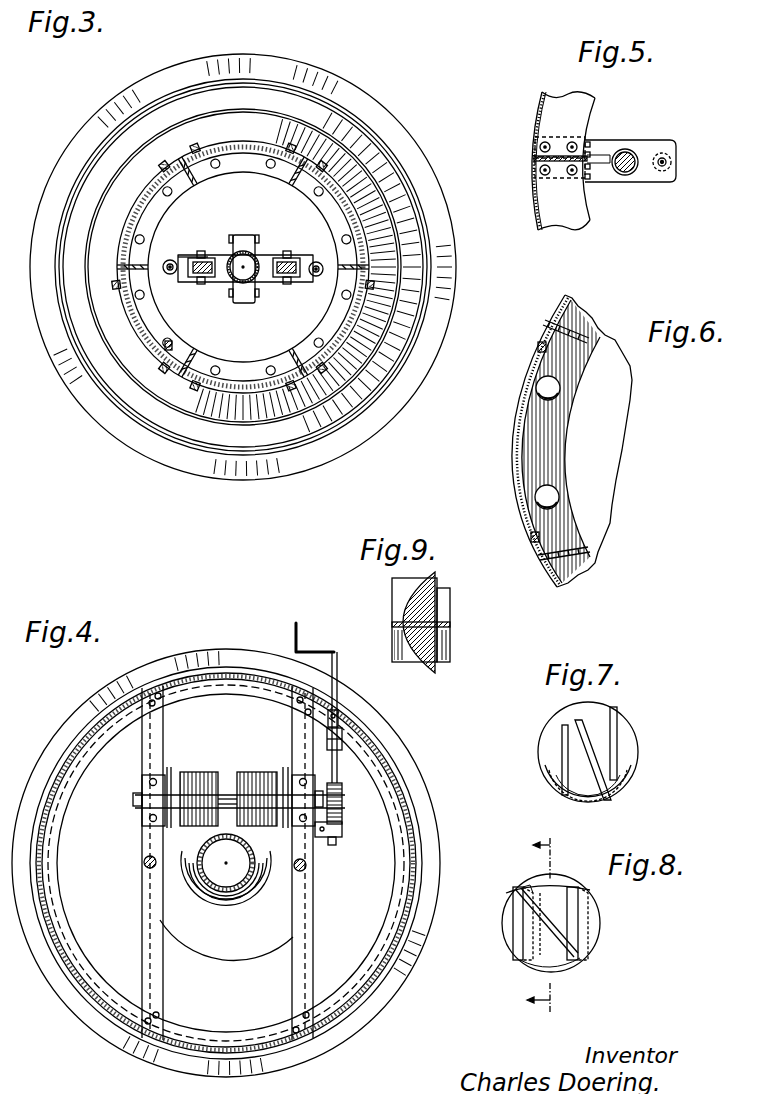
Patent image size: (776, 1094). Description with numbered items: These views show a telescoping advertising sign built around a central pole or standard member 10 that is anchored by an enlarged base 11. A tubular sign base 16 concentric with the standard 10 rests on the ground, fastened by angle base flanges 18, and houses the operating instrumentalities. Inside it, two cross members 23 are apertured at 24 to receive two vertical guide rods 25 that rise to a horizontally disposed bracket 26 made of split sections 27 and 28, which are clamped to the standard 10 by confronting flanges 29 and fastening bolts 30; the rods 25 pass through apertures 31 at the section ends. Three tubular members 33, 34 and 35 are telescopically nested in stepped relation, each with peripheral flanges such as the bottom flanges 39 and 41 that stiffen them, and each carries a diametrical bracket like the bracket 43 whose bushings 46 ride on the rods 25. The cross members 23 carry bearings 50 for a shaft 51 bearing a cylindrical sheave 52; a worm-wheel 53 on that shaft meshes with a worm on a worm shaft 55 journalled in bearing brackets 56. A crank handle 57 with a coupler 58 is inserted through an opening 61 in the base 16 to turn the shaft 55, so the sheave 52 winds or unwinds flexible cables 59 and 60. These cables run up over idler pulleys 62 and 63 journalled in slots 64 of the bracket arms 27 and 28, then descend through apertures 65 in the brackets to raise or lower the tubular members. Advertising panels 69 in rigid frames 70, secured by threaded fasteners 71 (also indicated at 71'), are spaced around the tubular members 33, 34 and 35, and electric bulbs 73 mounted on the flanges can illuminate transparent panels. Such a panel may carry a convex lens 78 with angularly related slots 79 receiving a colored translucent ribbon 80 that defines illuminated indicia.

In FIG. 3, the pole or standard member 10 is at (236, 240).
In FIG. 4, the pole or standard member 10 is at (226, 880).
In FIG. 4, the enlarged base 11 is at (226, 957).
In FIG. 3, the tubular sign base 16 is at (243, 267).
In FIG. 4, the tubular sign base 16 is at (226, 863).
In FIG. 3, the angle base flanges 18 is at (258, 267).
In FIG. 4, the angle base flanges 18 is at (246, 863).
In FIG. 4, the cross members 23 is at (225, 863).
In FIG. 4, the apertures 24 is at (226, 863).
In FIG. 3, the vertical guide rods 25 is at (248, 285).
In FIG. 4, the vertical guide rods 25 is at (227, 864).
In FIG. 3, the horizontally disposed bracket 26 is at (270, 316).
In FIG. 3, the bracket section 27 is at (201, 291).
In FIG. 3, the bracket section 28 is at (245, 246).
In FIG. 3, the confronting flanges 29 is at (248, 248).
In FIG. 3, the fastening bolts 30 is at (227, 316).
In FIG. 3, the apertures 31 is at (242, 250).
In FIG. 3, the tubular member 33 is at (243, 244).
In FIG. 3, the tubular member 34 is at (253, 235).
In FIG. 5, the tubular member 34 is at (530, 117).
In FIG. 3, the tubular member 35 is at (243, 243).
In FIG. 5, the bottom peripheral flange 39 is at (577, 215).
In FIG. 3, the bottom peripheral flange 41 is at (243, 285).
In FIG. 5, the diametrically extending bracket 43 is at (643, 180).
In FIG. 5, the bushings 46 is at (628, 150).
In FIG. 4, the bearings 50 is at (205, 775).
In FIG. 4, the shaft 51 is at (271, 780).
In FIG. 4, the cylindrical sheave 52 is at (240, 766).
In FIG. 4, the worm-wheel 53 is at (382, 776).
In FIG. 4, the worm shaft 55 is at (377, 783).
In FIG. 4, the bearing brackets 56 is at (388, 766).
In FIG. 4, the crank handle 57 is at (324, 629).
In FIG. 4, the coupler 58 is at (364, 712).
In FIG. 4, the flexible cable 59 is at (198, 784).
In FIG. 4, the flexible cable 60 is at (262, 784).
In FIG. 4, the opening 61 is at (297, 705).
In FIG. 3, the idler pulley 62 is at (201, 245).
In FIG. 3, the idler pulley 63 is at (295, 247).
In FIG. 3, the slots 64 is at (248, 259).
In FIG. 5, the apertures 65 is at (665, 158).
In FIG. 3, the advertising panels 69 is at (284, 300).
In FIG. 6, the advertising panels 69 is at (515, 458).
In FIG. 3, the rigid frames 70 is at (264, 293).
In FIG. 6, the rigid frames 70 is at (550, 537).
In FIG. 6, the threaded fasteners 71 is at (596, 539).
In FIG. 3, the nut 71' is at (204, 339).
In FIG. 3, the electric bulbs 73 is at (243, 248).
In FIG. 6, the electric bulbs 73 is at (560, 388).
In FIG. 9, the convex lenses 78 is at (437, 590).
In FIG. 7, the convex lenses 78 is at (567, 713).
In FIG. 8, the convex lenses 78 is at (602, 923).
In FIG. 7, the slots 79 is at (563, 748).
In FIG. 8, the slots 79 is at (570, 887).
In FIG. 9, the translucent ribbon 80 is at (450, 610).
In FIG. 8, the translucent ribbon 80 is at (533, 893).